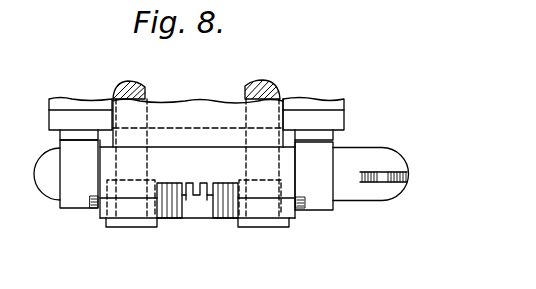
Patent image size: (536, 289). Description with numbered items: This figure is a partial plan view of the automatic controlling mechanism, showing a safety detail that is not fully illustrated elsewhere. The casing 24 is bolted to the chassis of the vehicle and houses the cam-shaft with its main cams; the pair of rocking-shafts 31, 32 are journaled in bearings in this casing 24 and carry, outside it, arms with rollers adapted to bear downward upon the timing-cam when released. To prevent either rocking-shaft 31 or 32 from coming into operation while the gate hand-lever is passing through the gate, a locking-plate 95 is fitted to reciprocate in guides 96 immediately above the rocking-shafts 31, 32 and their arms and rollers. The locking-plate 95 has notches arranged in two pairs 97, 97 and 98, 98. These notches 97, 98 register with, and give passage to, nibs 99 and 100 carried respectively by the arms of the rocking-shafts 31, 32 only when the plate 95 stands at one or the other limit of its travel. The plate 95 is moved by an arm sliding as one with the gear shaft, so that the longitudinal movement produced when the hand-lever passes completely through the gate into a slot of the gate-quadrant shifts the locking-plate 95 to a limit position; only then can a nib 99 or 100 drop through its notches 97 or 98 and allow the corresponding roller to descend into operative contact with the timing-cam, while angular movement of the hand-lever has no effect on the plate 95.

The casing 24 is at (72, 103).
The rocking-shaft 31 is at (146, 93).
The rocking-shaft 32 is at (244, 92).
The locking-plate 95 is at (366, 154).
The guides 96 is at (76, 200).
The notches 97 is at (170, 218).
The notches 98 is at (189, 197).
The nib 99 is at (169, 184).
The nib 100 is at (218, 184).